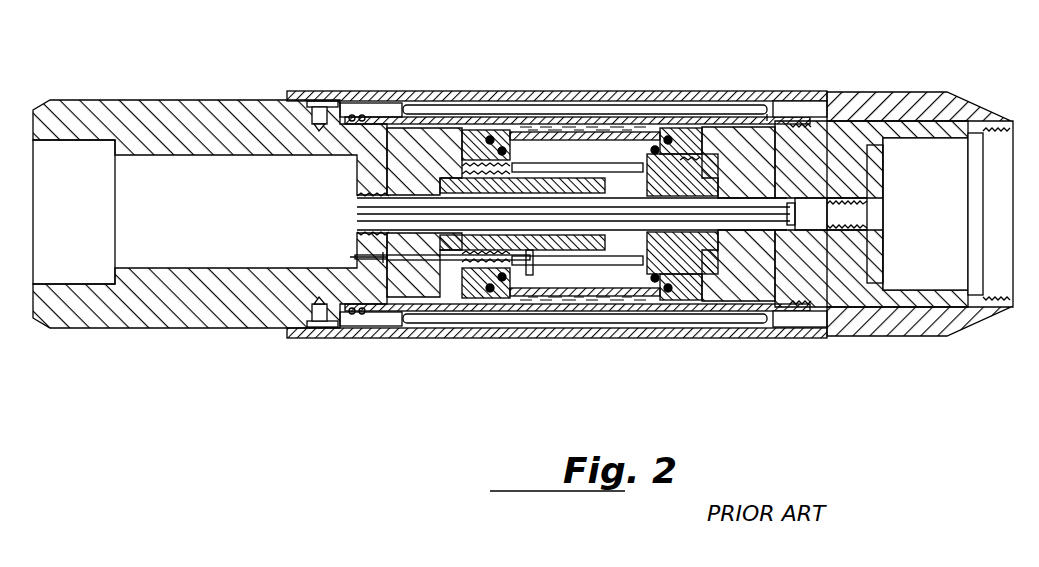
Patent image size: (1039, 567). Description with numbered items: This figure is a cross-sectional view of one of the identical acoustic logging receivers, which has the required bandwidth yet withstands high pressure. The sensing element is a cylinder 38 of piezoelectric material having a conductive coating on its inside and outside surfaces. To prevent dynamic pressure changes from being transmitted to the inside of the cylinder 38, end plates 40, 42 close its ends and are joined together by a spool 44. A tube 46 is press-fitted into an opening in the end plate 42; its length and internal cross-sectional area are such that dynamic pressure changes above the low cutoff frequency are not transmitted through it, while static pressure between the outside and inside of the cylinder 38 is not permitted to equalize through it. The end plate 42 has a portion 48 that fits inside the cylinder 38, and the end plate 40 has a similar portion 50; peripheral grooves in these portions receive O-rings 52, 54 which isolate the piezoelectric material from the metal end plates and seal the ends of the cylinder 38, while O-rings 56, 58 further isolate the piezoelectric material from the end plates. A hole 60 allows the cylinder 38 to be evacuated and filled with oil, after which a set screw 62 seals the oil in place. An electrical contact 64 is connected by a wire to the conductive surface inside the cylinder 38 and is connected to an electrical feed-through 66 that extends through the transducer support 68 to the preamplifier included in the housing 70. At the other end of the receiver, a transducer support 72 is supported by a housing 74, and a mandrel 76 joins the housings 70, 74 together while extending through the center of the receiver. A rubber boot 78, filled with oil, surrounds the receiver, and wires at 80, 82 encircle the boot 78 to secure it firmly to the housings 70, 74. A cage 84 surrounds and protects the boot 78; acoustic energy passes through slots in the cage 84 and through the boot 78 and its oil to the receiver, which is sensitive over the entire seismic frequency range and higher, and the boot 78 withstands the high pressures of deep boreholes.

The cylinder 38 is at (592, 110).
The end plate 40 is at (697, 125).
The end plate 42 is at (486, 136).
The spool 44 is at (585, 292).
The tube 46 is at (572, 165).
The portion 48 is at (506, 280).
The portion 50 is at (657, 283).
The O-ring 52 is at (505, 148).
The O-ring 54 is at (660, 136).
The O-ring 56 is at (492, 137).
The O-ring 58 is at (672, 145).
The hole 60 is at (500, 182).
The set screw 62 is at (465, 172).
The electrical contact 64 is at (453, 305).
The electrical feed-through 66 is at (352, 252).
The transducer support 68 is at (438, 290).
The housing 70 is at (240, 308).
The transducer support 72 is at (721, 280).
The housing 74 is at (903, 296).
The mandrel 76 is at (615, 218).
The rubber boot 78 is at (712, 112).
The wire 80 is at (833, 92).
The wire 82 is at (358, 114).
The cage 84 is at (812, 100).